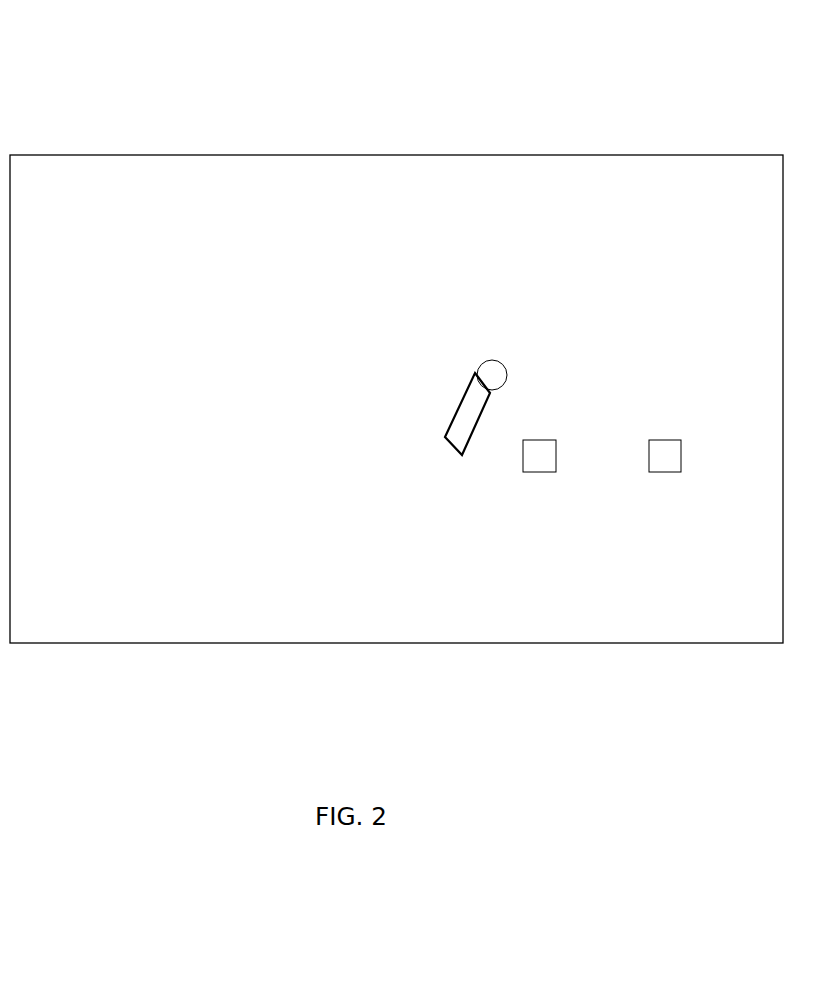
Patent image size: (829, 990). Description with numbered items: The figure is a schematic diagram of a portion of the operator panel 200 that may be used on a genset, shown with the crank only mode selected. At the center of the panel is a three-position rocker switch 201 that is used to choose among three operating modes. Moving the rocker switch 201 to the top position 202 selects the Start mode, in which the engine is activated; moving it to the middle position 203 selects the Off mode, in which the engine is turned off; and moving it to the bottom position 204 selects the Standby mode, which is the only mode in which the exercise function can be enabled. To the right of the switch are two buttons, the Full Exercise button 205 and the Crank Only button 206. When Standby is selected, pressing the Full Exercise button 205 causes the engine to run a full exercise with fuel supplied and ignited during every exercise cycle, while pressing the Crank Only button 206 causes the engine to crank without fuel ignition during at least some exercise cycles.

The operator panel 200 is at (230, 109).
The three-position rocker switch 201 is at (488, 360).
The top position 202 is at (310, 321).
The middle position 203 is at (318, 376).
The bottom position 204 is at (293, 452).
The Full Exercise button 205 is at (540, 440).
The Crank Only button 206 is at (665, 440).